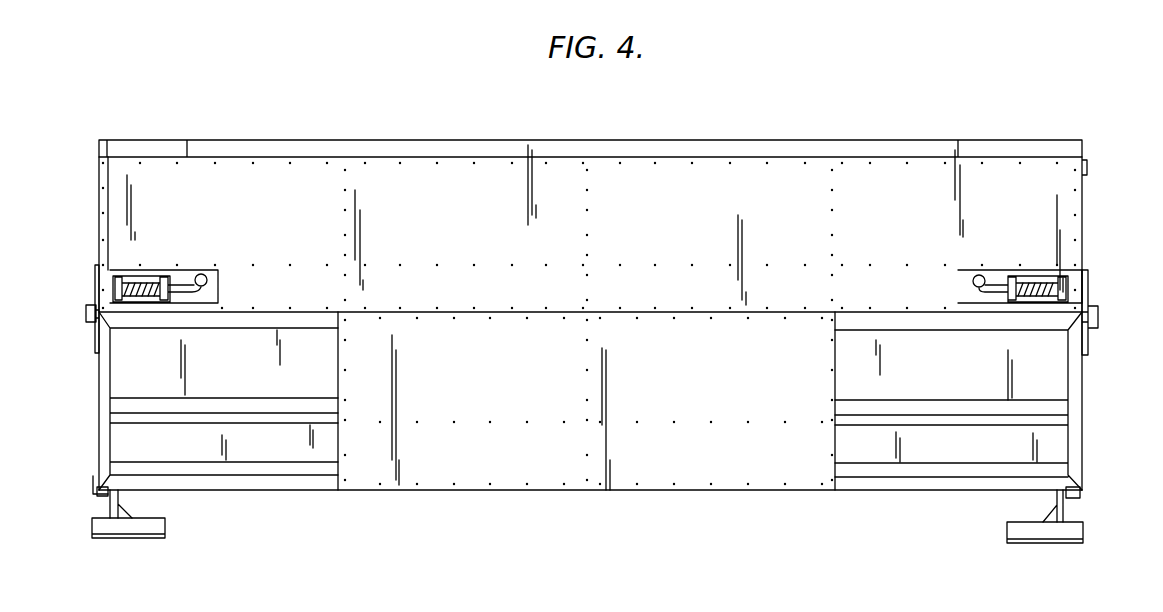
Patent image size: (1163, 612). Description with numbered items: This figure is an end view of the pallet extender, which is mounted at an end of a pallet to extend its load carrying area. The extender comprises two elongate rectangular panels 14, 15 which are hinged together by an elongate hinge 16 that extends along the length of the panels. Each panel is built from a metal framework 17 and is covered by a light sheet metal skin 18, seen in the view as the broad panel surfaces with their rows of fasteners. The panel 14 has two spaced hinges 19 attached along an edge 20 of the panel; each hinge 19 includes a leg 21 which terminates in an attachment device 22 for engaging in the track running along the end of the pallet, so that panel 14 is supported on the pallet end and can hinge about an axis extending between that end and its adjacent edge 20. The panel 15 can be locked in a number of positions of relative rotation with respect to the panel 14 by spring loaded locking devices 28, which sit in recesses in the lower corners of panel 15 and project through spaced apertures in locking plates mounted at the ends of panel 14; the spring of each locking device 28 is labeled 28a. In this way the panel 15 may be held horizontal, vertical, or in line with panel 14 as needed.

The panel 14 is at (693, 437).
The panel 15 is at (625, 175).
The elongate hinge 16 is at (338, 313).
The metal framework 17 is at (895, 147).
The sheet metal skin 18 is at (420, 168).
The hinge 19 is at (96, 492).
The edge 20 is at (230, 492).
The leg 21 is at (120, 500).
The attachment device 22 is at (150, 540).
The spring loaded locking device 28 is at (218, 272).
The latch spring 28a is at (152, 281).